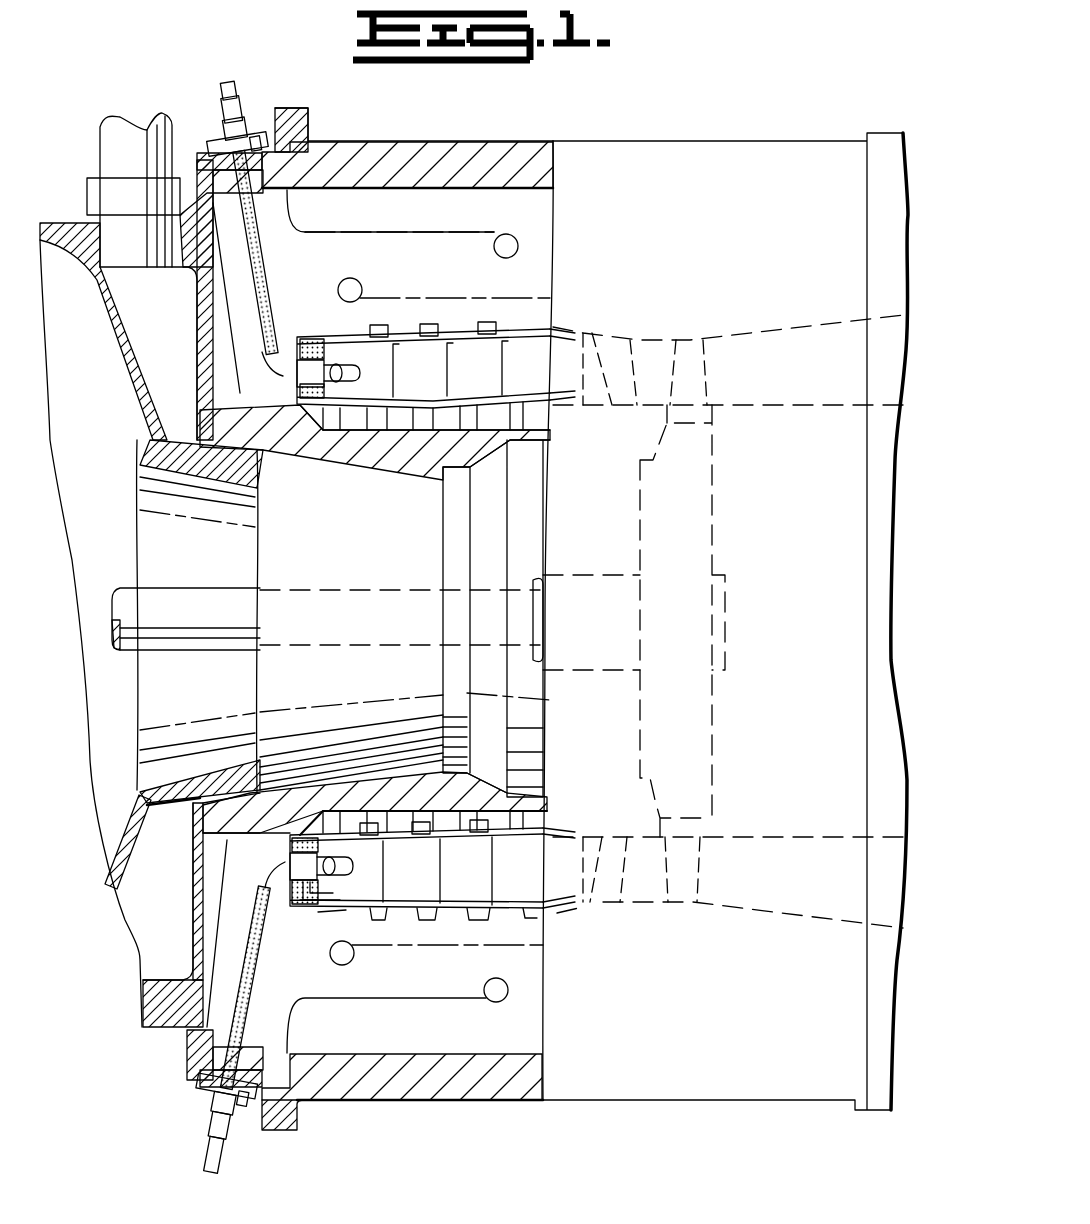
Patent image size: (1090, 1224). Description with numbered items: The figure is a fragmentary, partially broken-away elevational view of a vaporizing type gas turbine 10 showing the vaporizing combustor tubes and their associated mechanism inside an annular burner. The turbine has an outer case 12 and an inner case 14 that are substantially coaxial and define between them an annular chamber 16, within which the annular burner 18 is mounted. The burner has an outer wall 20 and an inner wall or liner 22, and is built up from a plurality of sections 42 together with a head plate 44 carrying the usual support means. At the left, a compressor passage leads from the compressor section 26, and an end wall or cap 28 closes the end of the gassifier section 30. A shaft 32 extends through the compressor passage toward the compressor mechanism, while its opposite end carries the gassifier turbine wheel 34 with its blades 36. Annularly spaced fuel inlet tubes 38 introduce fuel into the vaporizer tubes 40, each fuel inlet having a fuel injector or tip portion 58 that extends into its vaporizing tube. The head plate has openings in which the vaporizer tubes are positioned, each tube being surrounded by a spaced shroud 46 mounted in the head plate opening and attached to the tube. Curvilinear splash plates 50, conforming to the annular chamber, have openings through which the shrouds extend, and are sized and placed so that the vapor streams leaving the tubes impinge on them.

The gas turbine 10 is at (538, 140).
The outer case 12 is at (462, 140).
The inner case 14 is at (388, 466).
The annular chamber 16 is at (446, 285).
The annular burner 18 is at (540, 383).
The outer wall 20 is at (523, 324).
The inner wall 22 is at (522, 427).
The compressor section 26 is at (62, 217).
The end wall 28 is at (193, 320).
The gassifier section 30 is at (450, 1116).
The shaft 32 is at (210, 620).
The gassifier turbine wheel 34 is at (704, 523).
The blades 36 is at (704, 382).
The fuel inlet tube 38 is at (253, 100).
The vaporizer tube 40 is at (372, 368).
The sections 42 is at (340, 914).
The head plate 44 is at (310, 337).
The shroud 46 is at (316, 903).
The splash plate 50 is at (328, 888).
The fuel injector 58 is at (286, 378).